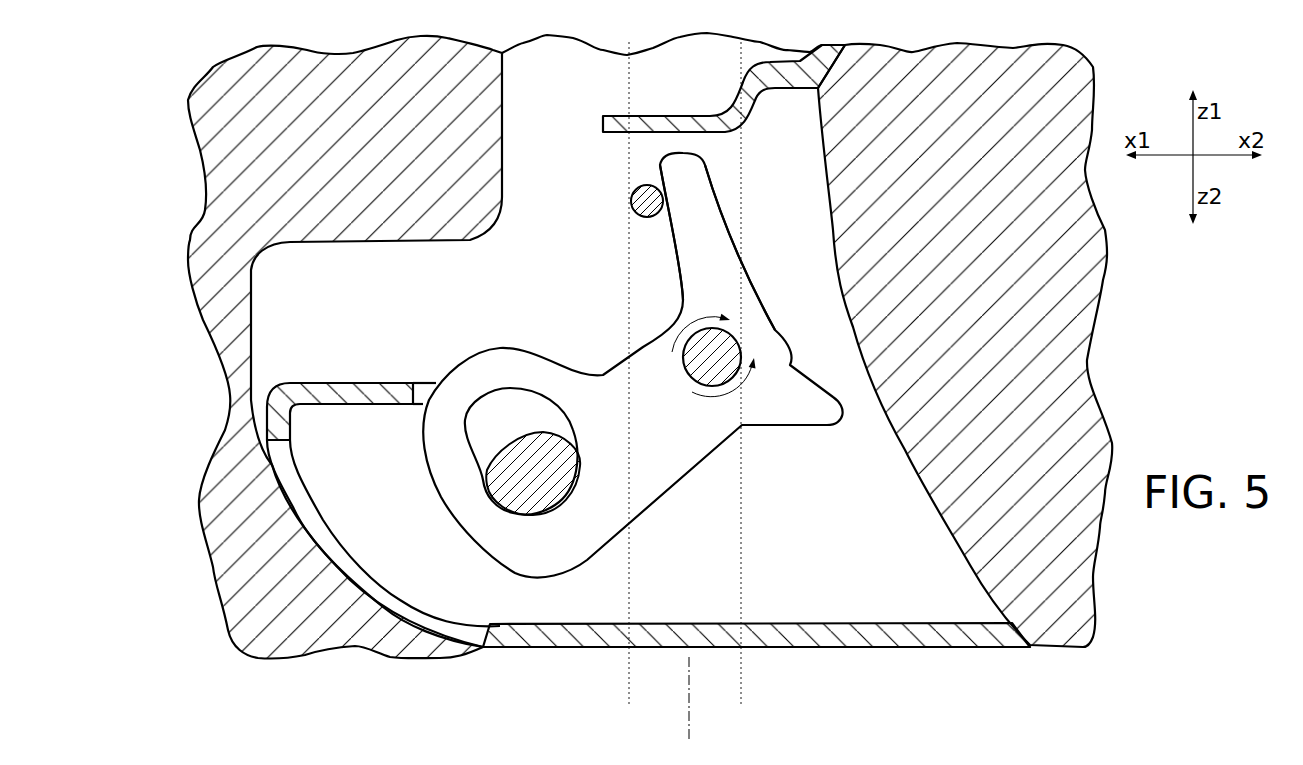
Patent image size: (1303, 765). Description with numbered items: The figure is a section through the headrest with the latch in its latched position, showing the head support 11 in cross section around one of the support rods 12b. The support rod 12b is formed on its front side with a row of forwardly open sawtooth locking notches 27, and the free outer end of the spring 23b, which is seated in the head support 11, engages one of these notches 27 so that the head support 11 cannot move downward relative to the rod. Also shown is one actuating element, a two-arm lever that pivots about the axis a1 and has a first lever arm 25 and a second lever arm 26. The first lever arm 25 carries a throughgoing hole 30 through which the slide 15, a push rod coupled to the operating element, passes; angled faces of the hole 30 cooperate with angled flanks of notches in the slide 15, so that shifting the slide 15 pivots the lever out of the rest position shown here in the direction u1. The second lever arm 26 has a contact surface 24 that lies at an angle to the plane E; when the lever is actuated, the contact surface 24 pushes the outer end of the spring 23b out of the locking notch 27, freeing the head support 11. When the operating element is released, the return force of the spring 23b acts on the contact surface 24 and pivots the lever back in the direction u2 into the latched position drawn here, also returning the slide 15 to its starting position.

The head support 11 is at (258, 612).
The support rod 12b is at (742, 682).
The slide 15 is at (498, 503).
The spring 23b is at (631, 208).
The contact surface 24 is at (676, 243).
The first lever arm 25 is at (559, 549).
The second lever arm 26 is at (712, 246).
The locking notch 27 is at (655, 188).
The throughgoing hole 30 is at (484, 420).
The pivot axis a1 is at (713, 356).
The pivot direction u1 is at (724, 390).
The pivot direction u2 is at (701, 319).
The plane E is at (688, 676).